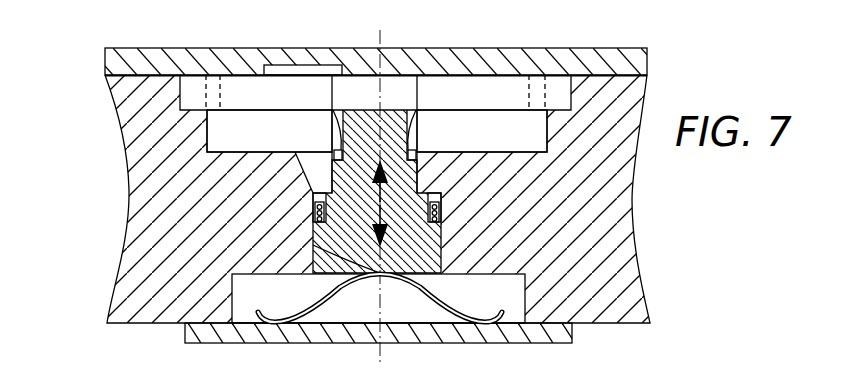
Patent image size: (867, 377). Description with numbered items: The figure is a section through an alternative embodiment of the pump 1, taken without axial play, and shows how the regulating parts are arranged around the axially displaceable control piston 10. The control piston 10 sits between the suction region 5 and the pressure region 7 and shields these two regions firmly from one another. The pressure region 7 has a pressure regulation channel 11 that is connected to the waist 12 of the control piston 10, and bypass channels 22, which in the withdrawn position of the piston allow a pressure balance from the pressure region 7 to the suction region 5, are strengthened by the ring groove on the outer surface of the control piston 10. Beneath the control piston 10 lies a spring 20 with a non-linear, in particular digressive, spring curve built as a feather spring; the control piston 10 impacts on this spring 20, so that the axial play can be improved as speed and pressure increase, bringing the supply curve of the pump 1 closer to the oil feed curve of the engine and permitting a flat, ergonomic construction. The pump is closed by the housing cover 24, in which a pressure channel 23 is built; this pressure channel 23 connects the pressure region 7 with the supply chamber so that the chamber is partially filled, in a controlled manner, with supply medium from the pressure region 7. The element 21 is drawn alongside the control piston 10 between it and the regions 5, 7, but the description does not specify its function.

The pump 1 is at (84, 292).
The suction region 5 is at (527, 143).
The pressure region 7 is at (248, 144).
The control piston 10 is at (380, 273).
The pressure regulation channel 11 is at (310, 172).
The waist 12 is at (418, 192).
The leaf spring 20 is at (463, 313).
The clearance gap 21 is at (332, 108).
The bypass channels 22 is at (332, 162).
The pressure channel 23 is at (313, 66).
The housing cover 24 is at (623, 58).